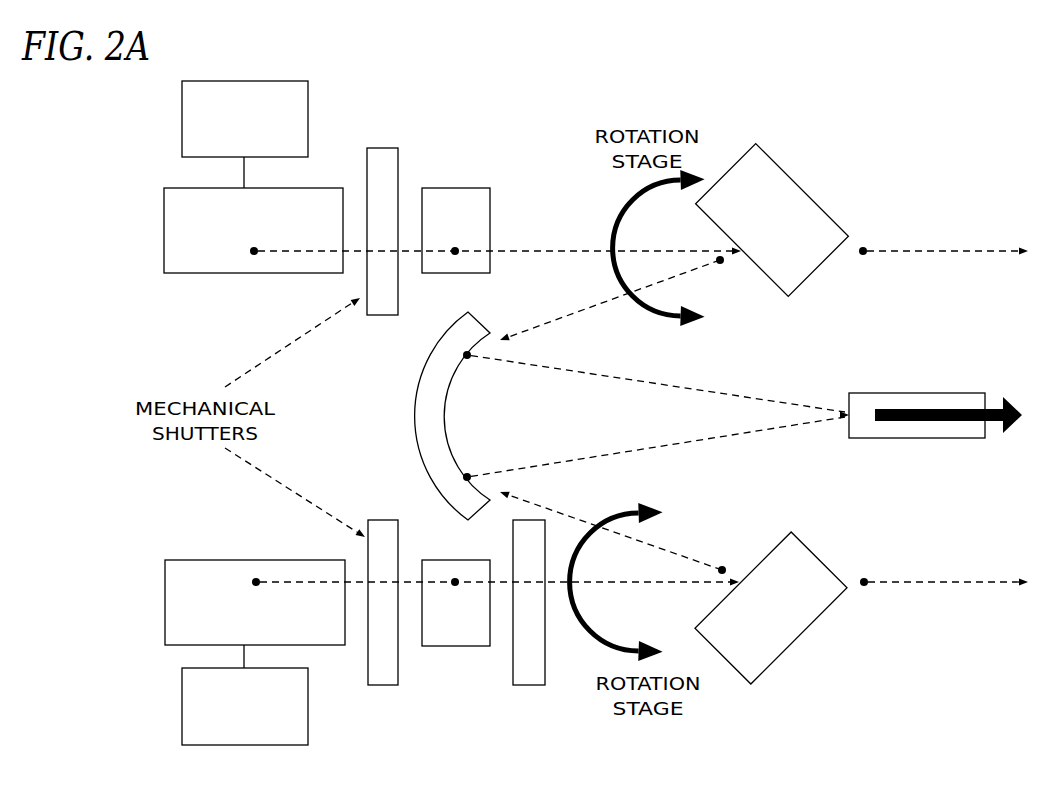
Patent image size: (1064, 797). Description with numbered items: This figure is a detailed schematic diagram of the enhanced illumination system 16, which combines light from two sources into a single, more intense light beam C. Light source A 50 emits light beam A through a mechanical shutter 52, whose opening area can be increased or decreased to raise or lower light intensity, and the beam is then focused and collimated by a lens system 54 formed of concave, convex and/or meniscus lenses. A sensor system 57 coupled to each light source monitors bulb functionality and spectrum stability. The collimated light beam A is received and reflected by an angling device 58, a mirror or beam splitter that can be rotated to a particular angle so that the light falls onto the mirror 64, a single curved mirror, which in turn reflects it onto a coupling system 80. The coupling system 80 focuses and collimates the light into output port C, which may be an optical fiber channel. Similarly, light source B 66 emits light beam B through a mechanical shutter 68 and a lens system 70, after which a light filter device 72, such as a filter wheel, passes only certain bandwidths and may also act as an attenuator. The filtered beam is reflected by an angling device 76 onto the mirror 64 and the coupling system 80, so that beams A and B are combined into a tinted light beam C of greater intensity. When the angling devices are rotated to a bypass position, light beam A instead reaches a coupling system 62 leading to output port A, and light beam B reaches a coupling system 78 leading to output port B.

The enhanced illumination system 16 is at (163, 771).
The light source A 50 is at (293, 186).
The mechanical shutter 52 is at (385, 143).
The lens system 54 is at (459, 188).
The sensor system 57 is at (308, 117).
The angling device 58 is at (823, 273).
The coupling system 62 is at (917, 253).
The mirror 64 is at (414, 413).
The light source B 66 is at (295, 650).
The mechanical shutter 68 is at (386, 688).
The lens system 70 is at (456, 648).
The light filter device 72 is at (533, 688).
The angling device 76 is at (822, 557).
The coupling system 78 is at (918, 581).
The coupling system 80 is at (918, 393).